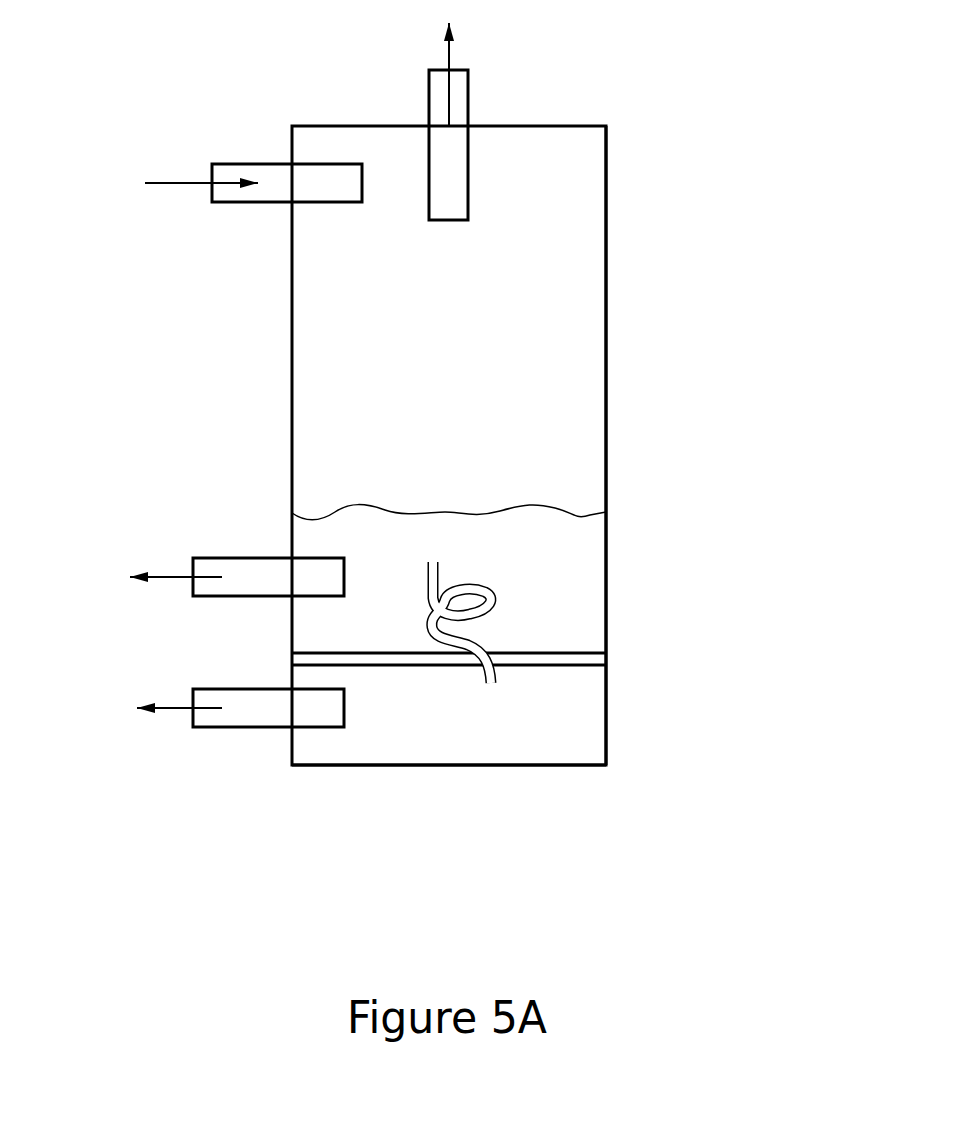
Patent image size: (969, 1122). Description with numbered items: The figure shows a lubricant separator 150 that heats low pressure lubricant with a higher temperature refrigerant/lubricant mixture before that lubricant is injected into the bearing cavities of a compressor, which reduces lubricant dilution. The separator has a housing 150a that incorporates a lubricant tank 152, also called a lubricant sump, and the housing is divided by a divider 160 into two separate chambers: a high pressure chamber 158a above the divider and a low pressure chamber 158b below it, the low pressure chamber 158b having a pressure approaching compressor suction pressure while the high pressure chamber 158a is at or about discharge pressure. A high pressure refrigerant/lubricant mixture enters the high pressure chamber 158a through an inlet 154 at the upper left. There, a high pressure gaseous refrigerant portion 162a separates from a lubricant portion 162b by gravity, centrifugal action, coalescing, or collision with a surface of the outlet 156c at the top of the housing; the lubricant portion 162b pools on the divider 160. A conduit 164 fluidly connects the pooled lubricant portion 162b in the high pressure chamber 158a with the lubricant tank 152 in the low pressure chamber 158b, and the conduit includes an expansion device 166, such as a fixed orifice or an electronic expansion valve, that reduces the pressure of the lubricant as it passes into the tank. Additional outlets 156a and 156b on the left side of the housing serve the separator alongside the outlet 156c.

The lubricant separator 150 is at (720, 97).
The housing 150a is at (606, 280).
The lubricant tank 152 is at (568, 753).
The inlet 154 is at (250, 163).
The outlet 156a is at (230, 557).
The outlet 156b is at (230, 728).
The outlet 156c is at (468, 95).
The high pressure chamber 158a is at (588, 435).
The low pressure chamber 158b is at (578, 725).
The divider 160 is at (587, 648).
The gaseous refrigerant portion 162a is at (323, 323).
The lubricant portion 162b is at (588, 587).
The conduit 164 is at (485, 593).
The expansion device 166 is at (430, 548).